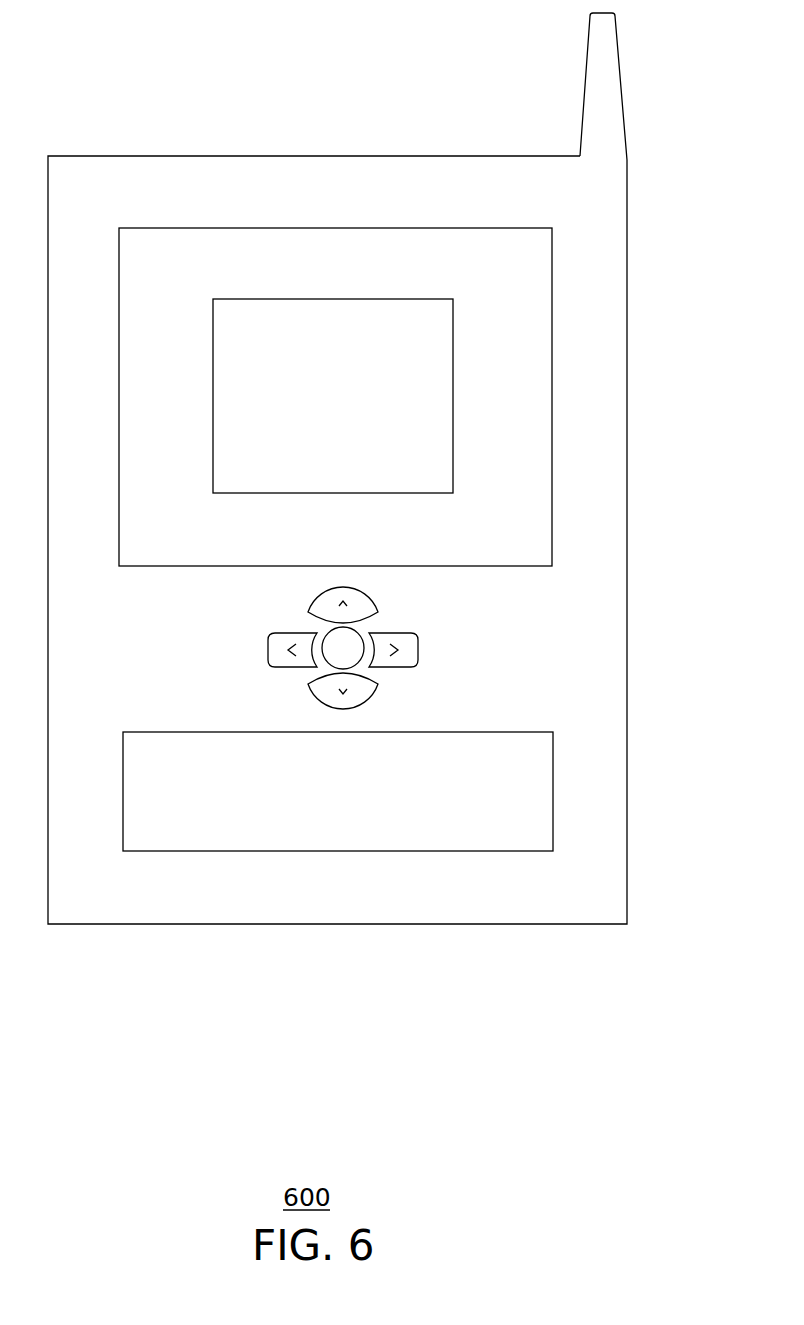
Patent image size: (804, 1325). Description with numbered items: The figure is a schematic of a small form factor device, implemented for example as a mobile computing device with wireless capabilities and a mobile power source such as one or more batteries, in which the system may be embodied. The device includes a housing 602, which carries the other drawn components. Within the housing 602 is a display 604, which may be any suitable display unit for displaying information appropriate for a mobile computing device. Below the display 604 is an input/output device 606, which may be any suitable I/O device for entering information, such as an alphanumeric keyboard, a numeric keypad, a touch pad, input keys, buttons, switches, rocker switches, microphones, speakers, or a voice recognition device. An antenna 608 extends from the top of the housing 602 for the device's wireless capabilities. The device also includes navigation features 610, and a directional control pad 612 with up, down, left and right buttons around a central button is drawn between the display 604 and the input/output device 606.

The housing 602 is at (628, 523).
The display 604 is at (490, 226).
The input/output (I/O) device 606 is at (553, 762).
The antenna 608 is at (587, 62).
The navigation features 610 is at (398, 297).
The navigation pad 612 is at (430, 641).